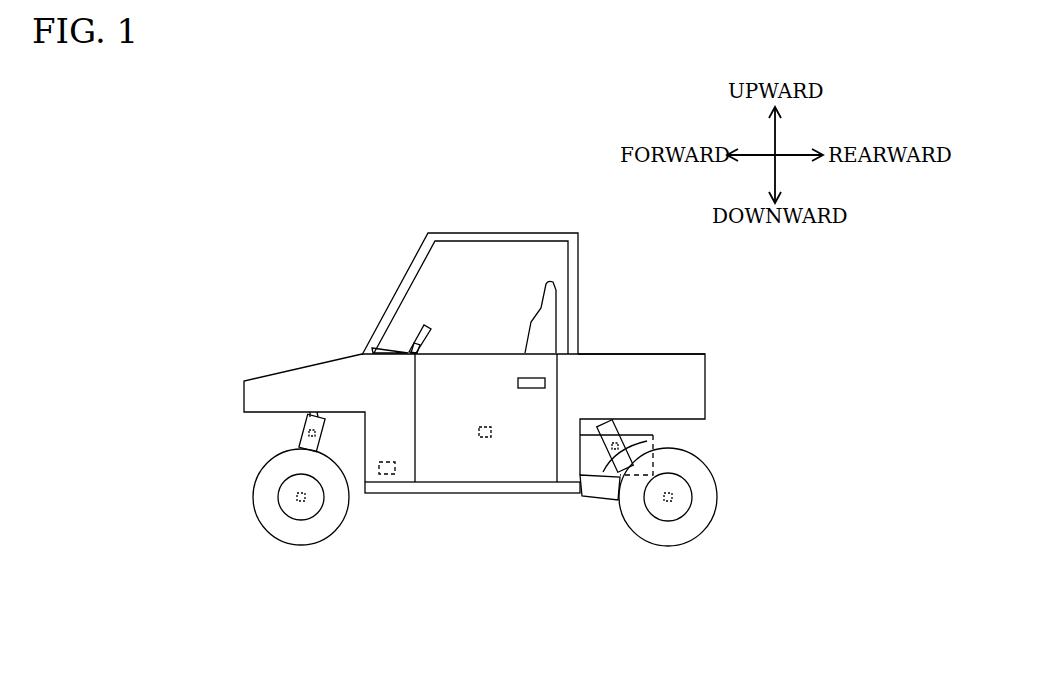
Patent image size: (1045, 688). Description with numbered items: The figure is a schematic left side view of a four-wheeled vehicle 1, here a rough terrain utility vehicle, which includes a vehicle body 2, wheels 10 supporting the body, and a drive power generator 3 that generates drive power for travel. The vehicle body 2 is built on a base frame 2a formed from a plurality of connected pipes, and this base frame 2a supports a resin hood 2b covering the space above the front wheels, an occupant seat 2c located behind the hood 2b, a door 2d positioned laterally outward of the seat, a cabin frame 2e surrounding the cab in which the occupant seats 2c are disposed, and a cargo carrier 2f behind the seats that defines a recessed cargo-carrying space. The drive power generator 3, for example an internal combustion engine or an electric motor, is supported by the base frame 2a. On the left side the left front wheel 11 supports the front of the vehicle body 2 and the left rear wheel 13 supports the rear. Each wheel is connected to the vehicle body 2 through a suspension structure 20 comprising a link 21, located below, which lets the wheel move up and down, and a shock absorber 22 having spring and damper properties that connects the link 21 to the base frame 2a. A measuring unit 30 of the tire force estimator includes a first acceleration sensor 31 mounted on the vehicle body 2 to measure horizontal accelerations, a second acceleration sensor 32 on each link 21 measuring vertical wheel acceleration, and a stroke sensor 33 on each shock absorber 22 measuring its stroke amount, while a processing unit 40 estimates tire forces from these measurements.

The four-wheeled vehicle 1 is at (252, 150).
The vehicle body 2 is at (472, 496).
The base frame 2a is at (420, 495).
The hood 2b is at (297, 368).
The occupant seat 2c is at (532, 325).
The door 2d is at (517, 450).
The cabin frame 2e is at (552, 236).
The cargo carrier 2f is at (676, 353).
The drive power generator 3 is at (592, 500).
The wheel 10 is at (484, 497).
The left front wheel 11 is at (253, 490).
The left rear wheel 13 is at (720, 490).
The suspension structure 20 is at (352, 597).
The link 21 is at (300, 500).
The shock absorber 22 is at (325, 430).
The measuring unit 30 is at (484, 490).
The first acceleration sensor 31 is at (489, 440).
The second acceleration sensor 32 is at (300, 497).
The stroke sensor 33 is at (305, 435).
The processing unit 40 is at (387, 481).